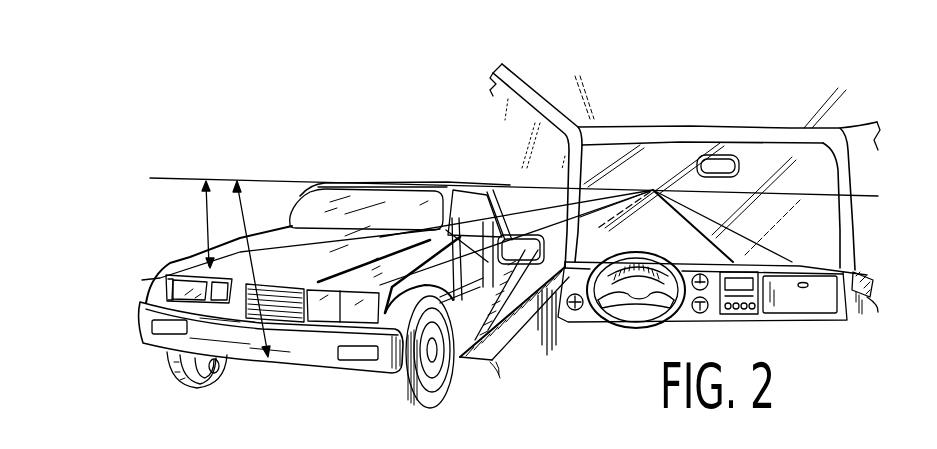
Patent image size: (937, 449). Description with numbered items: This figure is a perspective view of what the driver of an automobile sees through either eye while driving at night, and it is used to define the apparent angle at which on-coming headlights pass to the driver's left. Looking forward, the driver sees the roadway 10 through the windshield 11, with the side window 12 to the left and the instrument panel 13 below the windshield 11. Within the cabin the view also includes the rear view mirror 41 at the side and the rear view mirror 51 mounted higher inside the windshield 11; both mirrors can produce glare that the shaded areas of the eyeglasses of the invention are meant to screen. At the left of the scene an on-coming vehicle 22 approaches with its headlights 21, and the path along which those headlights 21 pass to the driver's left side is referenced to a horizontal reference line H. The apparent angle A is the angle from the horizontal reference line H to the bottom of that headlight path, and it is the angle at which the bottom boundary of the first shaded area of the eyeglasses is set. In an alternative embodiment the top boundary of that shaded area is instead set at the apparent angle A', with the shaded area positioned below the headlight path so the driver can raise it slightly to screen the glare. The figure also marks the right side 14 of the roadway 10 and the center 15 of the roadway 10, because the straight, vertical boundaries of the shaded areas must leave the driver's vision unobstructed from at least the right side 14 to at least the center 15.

The roadway 10 is at (652, 212).
The windshield 11 is at (826, 132).
The side window 12 is at (520, 118).
The instrument panel 13 is at (590, 316).
The right side of the roadway 14 is at (707, 230).
The center of the roadway 15 is at (601, 242).
The headlights 21 is at (190, 286).
The on-coming vehicle 22 is at (370, 182).
The rear view mirror 41 is at (519, 352).
The rear view mirror 51 is at (726, 162).
The horizontal reference line H is at (160, 178).
The apparent angle A is at (250, 253).
The apparent angle for top boundary A' is at (205, 209).